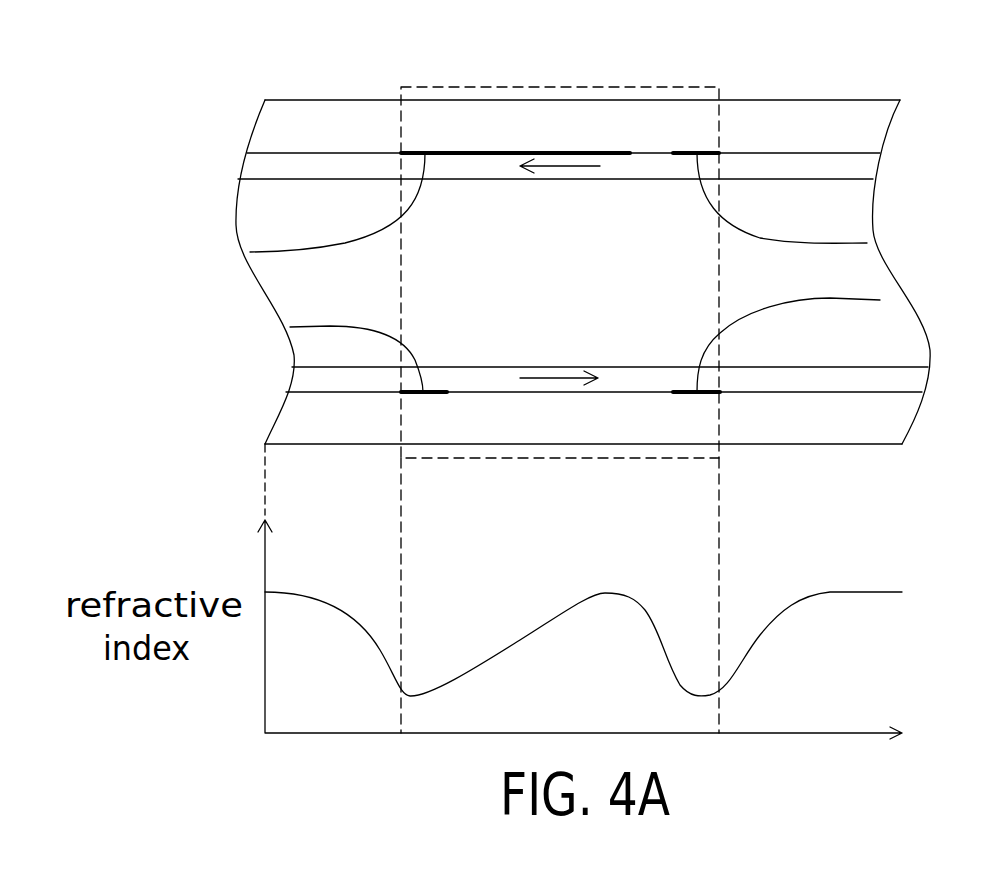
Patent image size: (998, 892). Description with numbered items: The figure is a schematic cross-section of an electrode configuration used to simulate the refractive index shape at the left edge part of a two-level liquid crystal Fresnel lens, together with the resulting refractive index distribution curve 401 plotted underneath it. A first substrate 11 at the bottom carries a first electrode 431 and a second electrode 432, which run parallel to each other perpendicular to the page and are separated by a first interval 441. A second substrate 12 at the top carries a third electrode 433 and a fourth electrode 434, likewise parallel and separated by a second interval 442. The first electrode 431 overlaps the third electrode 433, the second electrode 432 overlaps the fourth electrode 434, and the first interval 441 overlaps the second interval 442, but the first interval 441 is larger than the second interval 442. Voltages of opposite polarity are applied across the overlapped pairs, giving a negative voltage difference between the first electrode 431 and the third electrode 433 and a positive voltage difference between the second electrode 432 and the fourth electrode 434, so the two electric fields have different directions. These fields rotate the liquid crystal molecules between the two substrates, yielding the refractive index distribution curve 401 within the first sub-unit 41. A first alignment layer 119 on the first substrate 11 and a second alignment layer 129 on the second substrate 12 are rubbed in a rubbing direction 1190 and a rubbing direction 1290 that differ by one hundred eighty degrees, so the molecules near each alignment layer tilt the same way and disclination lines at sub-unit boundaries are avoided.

The first sub-unit 41 is at (432, 86).
The rubbing direction 1290 is at (567, 165).
The second interval 442 is at (648, 152).
The second substrate 12 is at (270, 127).
The second alignment layer 129 is at (257, 165).
The fourth electrode 434 is at (250, 252).
The third electrode 433 is at (867, 243).
The first electrode 431 is at (880, 300).
The second electrode 432 is at (290, 327).
The first alignment layer 119 is at (302, 376).
The first substrate 11 is at (290, 420).
The rubbing direction 1190 is at (560, 380).
The first interval 441 is at (647, 392).
The refractive index distribution curve 401 is at (608, 593).